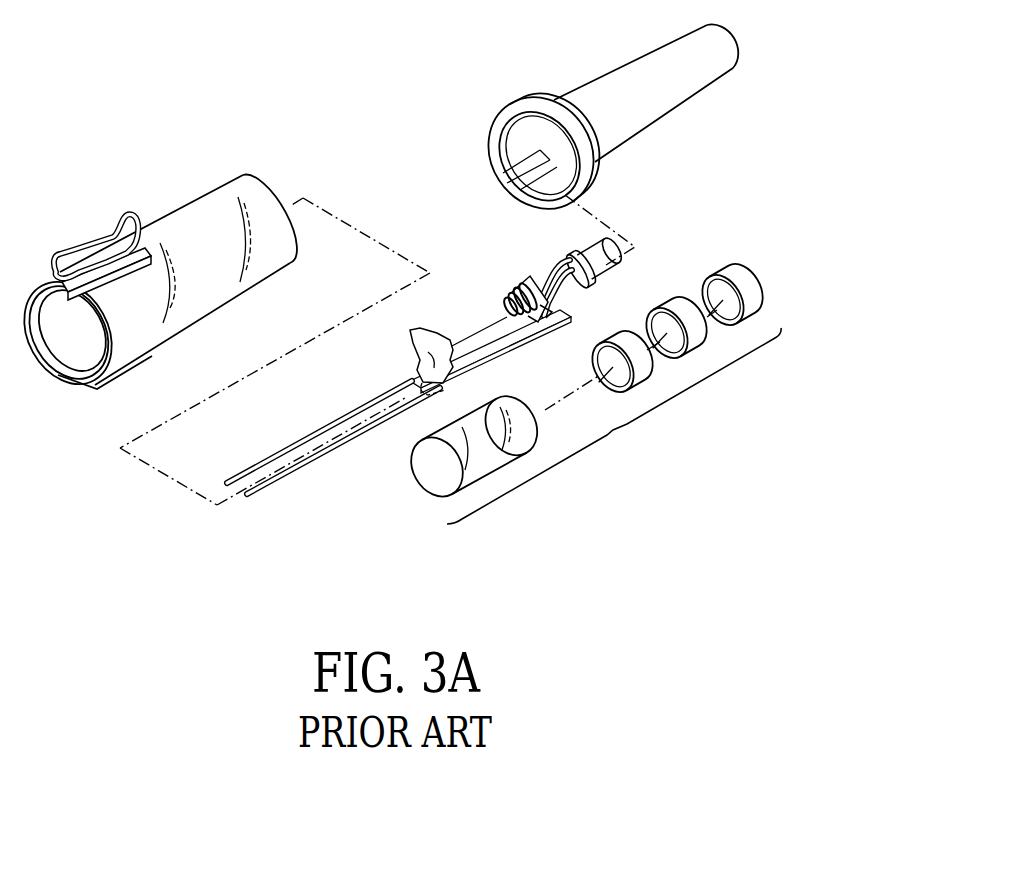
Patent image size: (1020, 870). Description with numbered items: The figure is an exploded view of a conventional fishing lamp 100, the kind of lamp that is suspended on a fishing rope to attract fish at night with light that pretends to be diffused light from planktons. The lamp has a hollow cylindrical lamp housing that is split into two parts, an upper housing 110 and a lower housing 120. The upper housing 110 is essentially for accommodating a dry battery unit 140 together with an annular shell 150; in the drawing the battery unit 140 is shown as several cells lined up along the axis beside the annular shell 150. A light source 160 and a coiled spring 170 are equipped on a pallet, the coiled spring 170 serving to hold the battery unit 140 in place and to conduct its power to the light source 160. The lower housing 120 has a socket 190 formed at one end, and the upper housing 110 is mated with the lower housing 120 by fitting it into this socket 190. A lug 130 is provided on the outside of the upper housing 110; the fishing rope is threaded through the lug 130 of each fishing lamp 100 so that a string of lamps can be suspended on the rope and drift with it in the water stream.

The fishing lamp 100 is at (350, 105).
The upper housing 110 is at (220, 182).
The lower housing 120 is at (637, 68).
The lug 130 is at (76, 250).
The dry battery unit 140 is at (617, 332).
The annular shell 150 is at (500, 403).
The light source 160 is at (600, 247).
The coiled spring 170 is at (507, 300).
The socket 190 is at (522, 117).